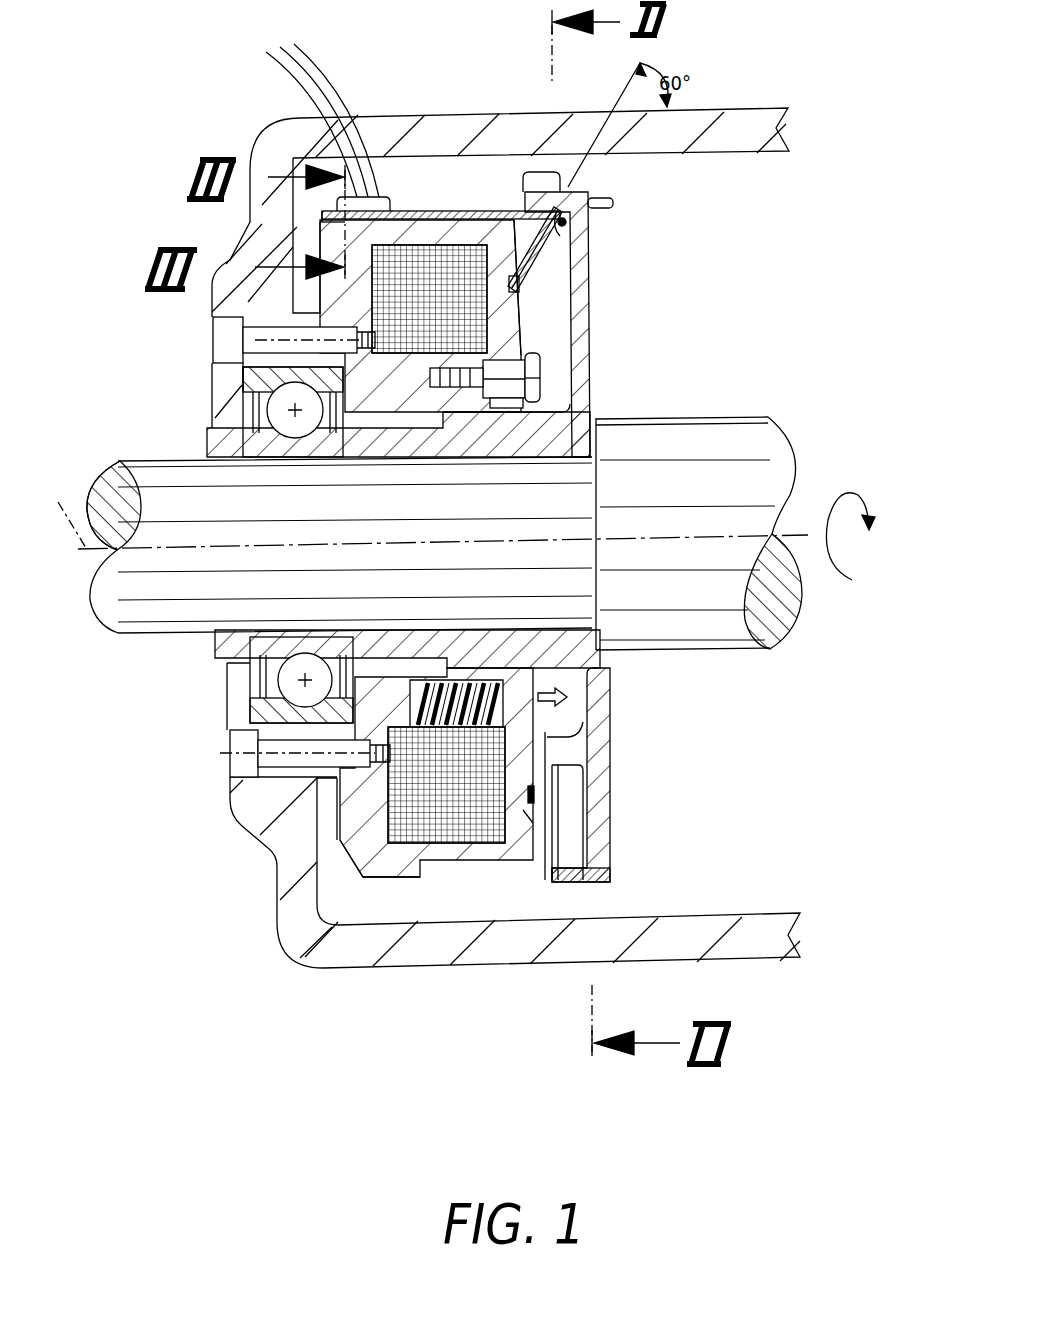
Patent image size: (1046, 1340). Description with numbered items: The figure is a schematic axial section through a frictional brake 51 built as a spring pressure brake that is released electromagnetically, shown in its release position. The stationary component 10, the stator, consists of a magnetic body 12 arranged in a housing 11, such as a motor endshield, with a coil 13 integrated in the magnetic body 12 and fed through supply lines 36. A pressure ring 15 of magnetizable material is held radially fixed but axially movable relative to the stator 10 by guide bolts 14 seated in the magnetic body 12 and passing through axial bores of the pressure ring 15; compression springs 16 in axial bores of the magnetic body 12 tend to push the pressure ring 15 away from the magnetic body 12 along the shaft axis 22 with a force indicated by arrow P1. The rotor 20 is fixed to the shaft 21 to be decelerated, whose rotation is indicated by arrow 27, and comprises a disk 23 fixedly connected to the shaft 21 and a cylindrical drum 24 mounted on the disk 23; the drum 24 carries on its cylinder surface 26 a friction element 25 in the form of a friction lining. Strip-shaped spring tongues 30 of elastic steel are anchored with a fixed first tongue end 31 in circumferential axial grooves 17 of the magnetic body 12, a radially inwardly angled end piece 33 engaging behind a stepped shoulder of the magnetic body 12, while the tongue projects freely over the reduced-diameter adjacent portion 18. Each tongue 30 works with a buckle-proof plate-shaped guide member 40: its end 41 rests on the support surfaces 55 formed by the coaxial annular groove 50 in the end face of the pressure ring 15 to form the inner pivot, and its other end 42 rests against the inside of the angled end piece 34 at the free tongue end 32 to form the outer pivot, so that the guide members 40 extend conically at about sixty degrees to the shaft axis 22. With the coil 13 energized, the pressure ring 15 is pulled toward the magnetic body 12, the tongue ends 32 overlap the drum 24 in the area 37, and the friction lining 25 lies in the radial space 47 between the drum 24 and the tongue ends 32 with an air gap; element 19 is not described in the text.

The first stationary component 10 is at (248, 116).
The housing 11 is at (476, 950).
The magnetic body 12 is at (410, 845).
The coil 13 is at (420, 845).
The guide bolts 14 is at (510, 388).
The pressure ring 15 is at (544, 880).
The compression springs 16 is at (403, 850).
The circumferential axial grooves 17 is at (333, 209).
The adjacent portion 18 is at (537, 862).
The housing inner wall 19 is at (343, 858).
The rotor 20 is at (608, 332).
The shaft 21 is at (690, 480).
The shaft axis 22 is at (425, 509).
The disk 23 is at (600, 779).
The cylindrical drum 24 is at (592, 884).
The friction element 25 is at (560, 205).
The cylinder surface 26 is at (575, 738).
The arrow 27 is at (856, 487).
The spring tongues 30 is at (447, 200).
The fixed first tongue end 31 is at (380, 197).
The free tongue end 32 is at (514, 213).
The radially inwardly angled end piece 33 is at (327, 228).
The end piece 34 is at (566, 222).
The supply lines 36 is at (268, 54).
The overlap area 37 is at (538, 171).
The guide members 40 is at (552, 262).
The end of guide member 41 is at (520, 288).
The other end of guide member 42 is at (564, 232).
The radial space 47 is at (613, 203).
The coaxial annular groove 50 is at (540, 798).
The frictional brake 51 is at (790, 294).
The support surfaces 55 is at (545, 798).
The arrow P1 is at (548, 690).